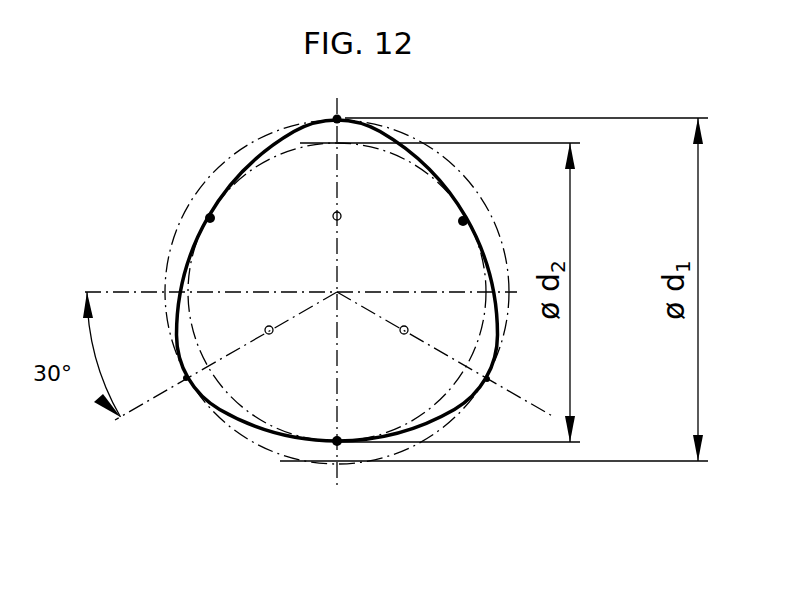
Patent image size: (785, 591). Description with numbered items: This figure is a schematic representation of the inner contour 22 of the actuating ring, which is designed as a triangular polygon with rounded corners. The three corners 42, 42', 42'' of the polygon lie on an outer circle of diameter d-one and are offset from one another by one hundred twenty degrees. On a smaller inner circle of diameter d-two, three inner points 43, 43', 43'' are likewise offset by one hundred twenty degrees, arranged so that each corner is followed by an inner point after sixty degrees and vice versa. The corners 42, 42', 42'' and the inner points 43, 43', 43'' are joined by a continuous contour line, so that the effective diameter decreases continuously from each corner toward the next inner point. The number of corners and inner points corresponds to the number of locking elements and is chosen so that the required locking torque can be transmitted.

The inner contour 22 is at (200, 194).
The corner 42 is at (283, 105).
The corner 42' is at (461, 444).
The corner 42'' is at (175, 429).
The inner point 43 is at (156, 226).
The inner point 43' is at (490, 198).
The inner point 43'' is at (298, 476).